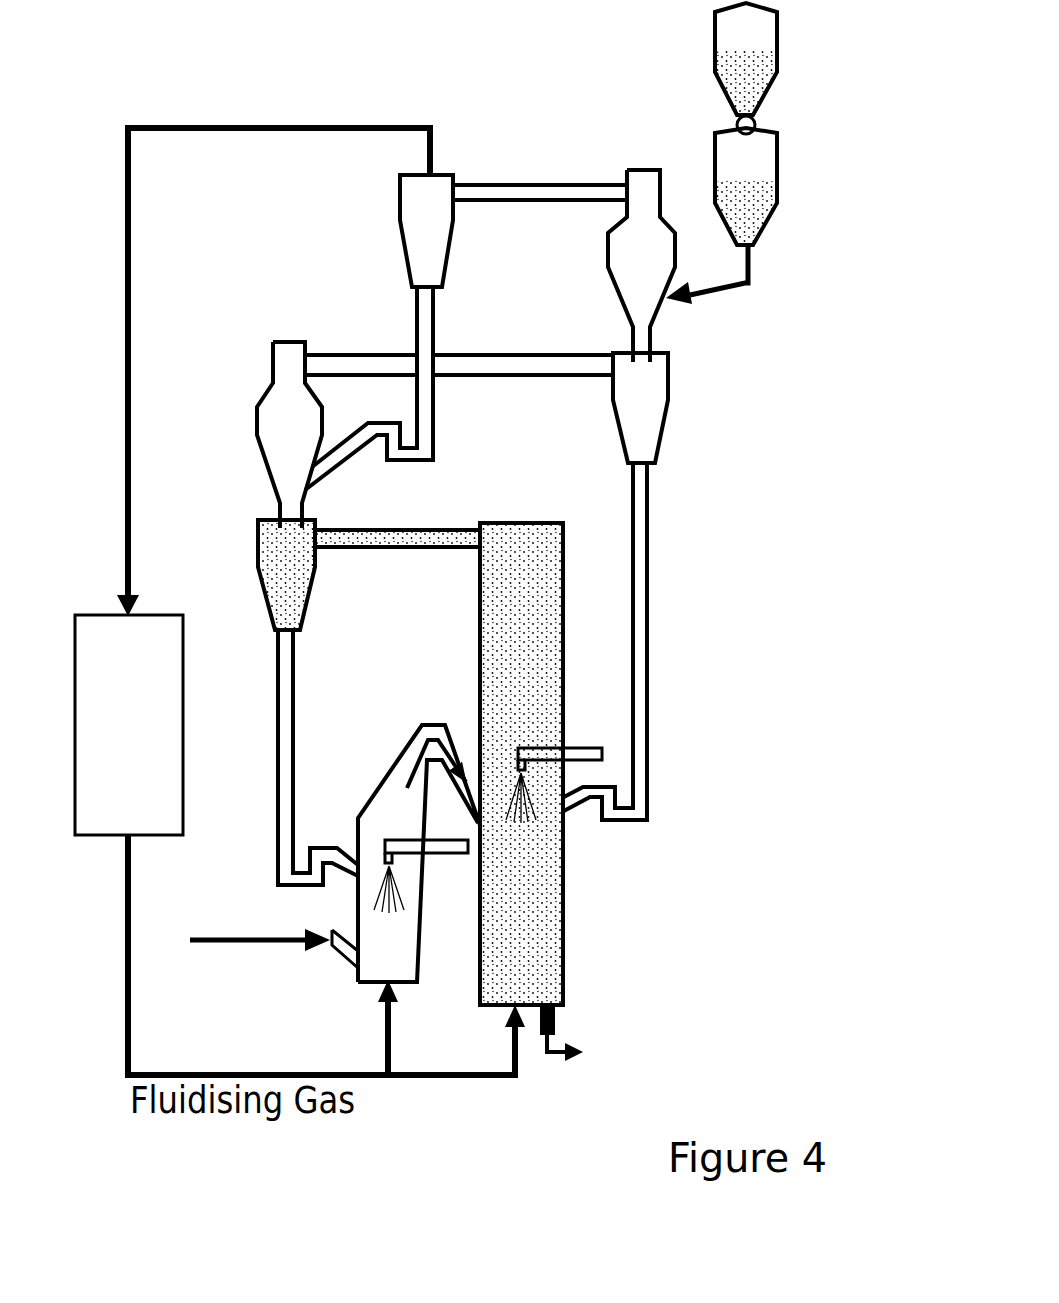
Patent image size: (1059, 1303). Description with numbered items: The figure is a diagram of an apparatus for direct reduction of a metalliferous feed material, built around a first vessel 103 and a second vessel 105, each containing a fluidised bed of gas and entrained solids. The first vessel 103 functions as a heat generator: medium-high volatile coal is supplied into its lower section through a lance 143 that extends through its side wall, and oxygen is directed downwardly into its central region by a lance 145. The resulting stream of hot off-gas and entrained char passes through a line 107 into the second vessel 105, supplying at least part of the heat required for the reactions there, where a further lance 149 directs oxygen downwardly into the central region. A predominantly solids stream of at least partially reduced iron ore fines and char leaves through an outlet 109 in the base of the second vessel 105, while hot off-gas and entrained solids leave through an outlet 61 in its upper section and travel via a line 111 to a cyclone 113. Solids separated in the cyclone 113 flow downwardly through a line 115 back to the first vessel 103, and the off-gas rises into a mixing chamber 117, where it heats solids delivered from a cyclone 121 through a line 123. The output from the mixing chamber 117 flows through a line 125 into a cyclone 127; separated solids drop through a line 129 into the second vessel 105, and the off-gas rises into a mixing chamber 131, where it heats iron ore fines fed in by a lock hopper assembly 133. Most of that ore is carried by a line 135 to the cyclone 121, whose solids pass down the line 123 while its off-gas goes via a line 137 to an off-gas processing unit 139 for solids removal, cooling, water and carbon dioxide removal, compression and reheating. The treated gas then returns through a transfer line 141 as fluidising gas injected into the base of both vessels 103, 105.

The outlet 61 is at (488, 540).
The first vessel 103 is at (381, 775).
The second vessel 105 is at (568, 893).
The line 107 is at (437, 720).
The outlet 109 is at (566, 1010).
The line 111 is at (423, 527).
The cyclone 113 is at (262, 598).
The line 115 is at (275, 775).
The mixing chamber 117 is at (257, 457).
The cyclone 121 is at (397, 208).
The line 123 is at (413, 330).
The line 125 is at (535, 352).
The cyclone 127 is at (668, 445).
The line 129 is at (655, 603).
The mixing chamber 131 is at (641, 165).
The lock hopper assembly 133 is at (781, 113).
The line 135 is at (529, 182).
The line 137 is at (207, 124).
The off-gas processing unit 139 is at (98, 607).
The transfer line 141 is at (126, 1020).
The lance 143 is at (347, 967).
The lance 145 is at (433, 862).
The lance 149 is at (548, 742).